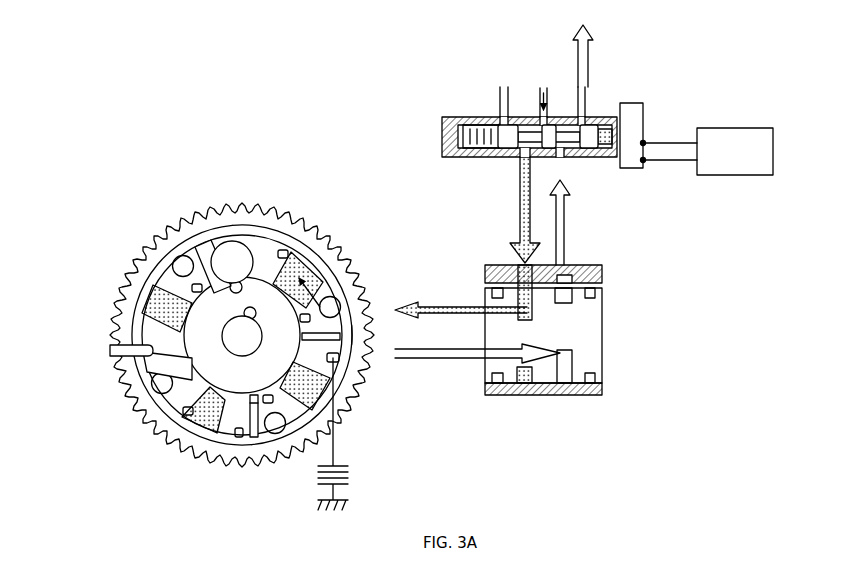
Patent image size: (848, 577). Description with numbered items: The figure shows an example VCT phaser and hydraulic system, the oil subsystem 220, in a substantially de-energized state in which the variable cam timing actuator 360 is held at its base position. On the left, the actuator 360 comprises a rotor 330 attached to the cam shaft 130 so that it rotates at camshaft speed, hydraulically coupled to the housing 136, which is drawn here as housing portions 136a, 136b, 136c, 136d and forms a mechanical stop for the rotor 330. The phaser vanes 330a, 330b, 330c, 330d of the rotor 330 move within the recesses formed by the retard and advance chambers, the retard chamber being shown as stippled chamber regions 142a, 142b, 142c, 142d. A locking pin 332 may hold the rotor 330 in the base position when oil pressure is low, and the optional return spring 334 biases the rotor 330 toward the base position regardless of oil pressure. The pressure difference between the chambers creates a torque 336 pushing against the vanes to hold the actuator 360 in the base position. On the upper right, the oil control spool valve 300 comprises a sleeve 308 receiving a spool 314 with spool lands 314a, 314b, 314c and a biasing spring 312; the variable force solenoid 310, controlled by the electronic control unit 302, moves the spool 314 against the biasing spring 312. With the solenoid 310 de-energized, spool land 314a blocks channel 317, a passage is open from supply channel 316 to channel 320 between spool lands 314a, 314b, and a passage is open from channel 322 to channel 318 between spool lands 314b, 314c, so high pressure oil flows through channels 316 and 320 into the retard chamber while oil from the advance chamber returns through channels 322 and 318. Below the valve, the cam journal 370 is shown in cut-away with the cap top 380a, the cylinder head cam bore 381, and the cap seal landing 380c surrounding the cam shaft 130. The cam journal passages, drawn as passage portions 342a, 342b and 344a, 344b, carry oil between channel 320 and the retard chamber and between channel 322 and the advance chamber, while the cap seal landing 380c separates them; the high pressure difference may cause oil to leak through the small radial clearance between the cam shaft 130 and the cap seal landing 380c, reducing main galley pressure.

The oil subsystem 220 is at (212, 68).
The variable cam timing actuator 360 is at (185, 196).
The torque 336 is at (340, 262).
The housing 136 is at (148, 270).
The housing segment 136a is at (160, 272).
The housing segment 136b is at (165, 395).
The housing segment 136c is at (292, 425).
The housing segment 136d is at (353, 322).
The chamber 142a is at (160, 305).
The chamber 142b is at (195, 420).
The chamber 142c is at (320, 395).
The chamber 142d is at (311, 266).
The rotor 330 is at (267, 348).
The phaser vane 330a is at (262, 248).
The phaser vane 330b is at (140, 323).
The phaser vane 330c is at (230, 445).
The phaser vane 330d is at (353, 347).
The locking pin 332 is at (110, 350).
The return spring 334 is at (352, 472).
The oil control spool valve 300 is at (672, 72).
The sleeve 308 is at (442, 135).
The biasing spring 312 is at (480, 127).
The spool 314 is at (530, 133).
The spool land 314a is at (508, 150).
The spool land 314b is at (550, 120).
The spool land 314c is at (590, 150).
The hydraulic channel 316 is at (540, 88).
The hydraulic channel 317 is at (505, 87).
The hydraulic channel 318 is at (583, 97).
The variable force solenoid 310 is at (632, 103).
The electronic control unit 302 is at (734, 128).
The hydraulic channel 320 is at (533, 190).
The hydraulic channel 322 is at (568, 185).
The cam journal 370 is at (688, 293).
The cap top 380a is at (604, 278).
The cap seal landing 380c is at (520, 270).
The cam shaft 130 is at (605, 340).
The cylinder head cam bore 381 is at (605, 392).
The passage 342a is at (520, 312).
The passage 342b is at (520, 377).
The block 344a is at (570, 370).
The block 344b is at (568, 302).